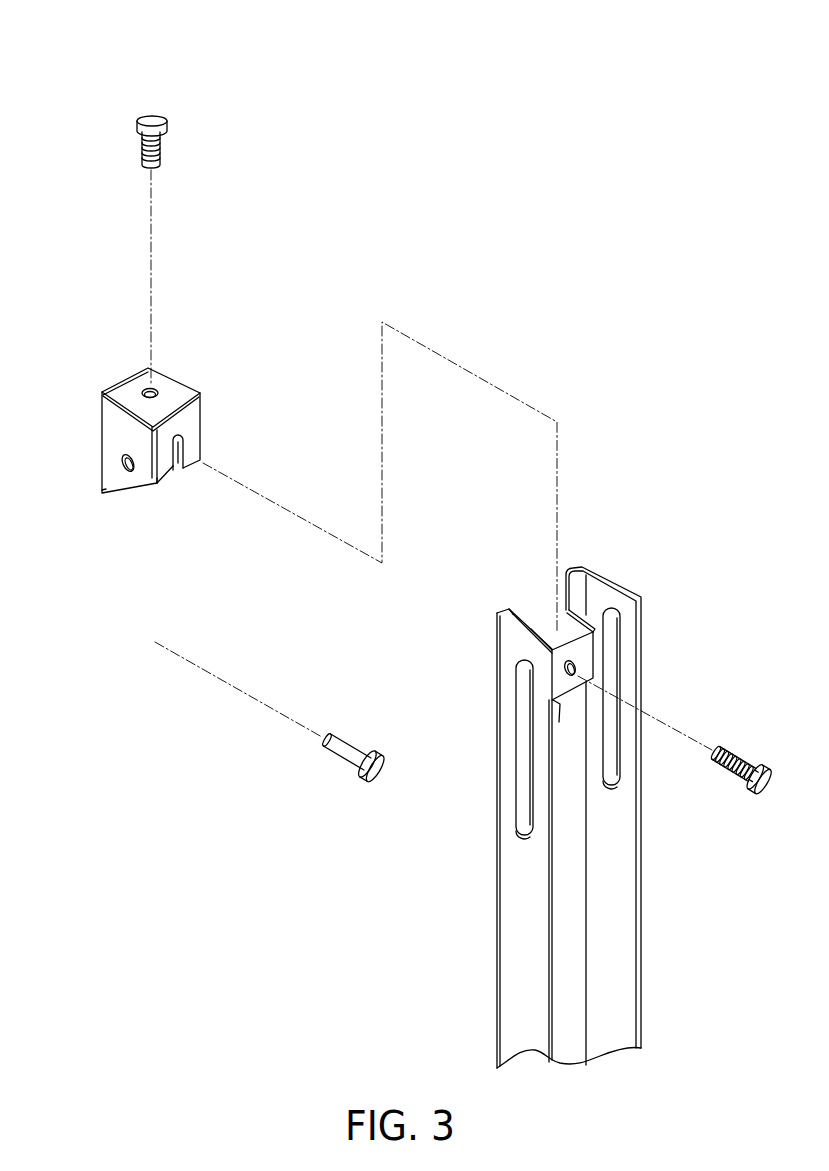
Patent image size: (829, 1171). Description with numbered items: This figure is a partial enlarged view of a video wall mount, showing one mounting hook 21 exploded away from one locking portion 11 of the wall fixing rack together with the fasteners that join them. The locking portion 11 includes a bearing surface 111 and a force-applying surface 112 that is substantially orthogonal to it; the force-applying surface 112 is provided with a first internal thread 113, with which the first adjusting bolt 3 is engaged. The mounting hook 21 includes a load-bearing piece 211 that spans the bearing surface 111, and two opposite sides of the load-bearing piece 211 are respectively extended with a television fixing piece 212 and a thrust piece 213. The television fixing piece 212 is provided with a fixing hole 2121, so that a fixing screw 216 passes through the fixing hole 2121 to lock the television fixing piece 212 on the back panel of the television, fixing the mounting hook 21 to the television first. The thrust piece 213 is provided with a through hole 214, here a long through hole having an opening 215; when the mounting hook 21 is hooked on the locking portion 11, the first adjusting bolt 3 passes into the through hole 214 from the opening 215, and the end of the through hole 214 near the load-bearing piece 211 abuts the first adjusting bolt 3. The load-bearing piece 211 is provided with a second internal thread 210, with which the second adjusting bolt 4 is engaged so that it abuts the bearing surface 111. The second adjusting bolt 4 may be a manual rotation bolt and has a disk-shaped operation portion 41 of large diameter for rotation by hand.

The first adjusting bolt 3 is at (731, 788).
The second adjusting bolt 4 is at (172, 88).
The operation portion 41 is at (157, 127).
The locking portion 11 is at (635, 777).
The bearing surface 111 is at (632, 600).
The force-applying surface 112 is at (583, 653).
The first internal thread 113 is at (648, 648).
The mounting hook 21 is at (171, 383).
The second internal thread 210 is at (152, 390).
The load-bearing piece 211 is at (176, 299).
The television fixing piece 212 is at (94, 456).
The fixing hole 2121 is at (132, 468).
The thrust piece 213 is at (233, 394).
The through hole 214 is at (185, 446).
The opening 215 is at (181, 482).
The fixing screw 216 is at (350, 753).